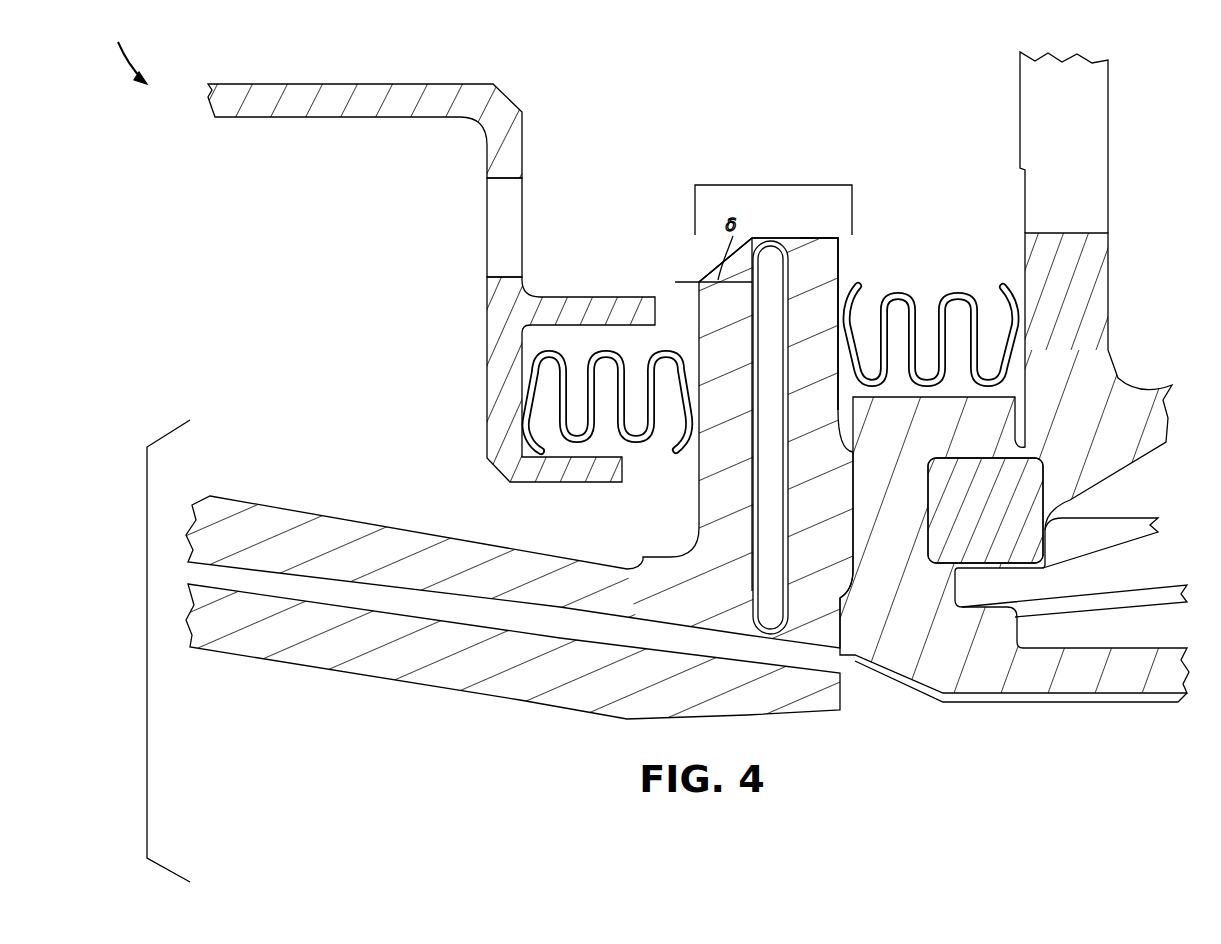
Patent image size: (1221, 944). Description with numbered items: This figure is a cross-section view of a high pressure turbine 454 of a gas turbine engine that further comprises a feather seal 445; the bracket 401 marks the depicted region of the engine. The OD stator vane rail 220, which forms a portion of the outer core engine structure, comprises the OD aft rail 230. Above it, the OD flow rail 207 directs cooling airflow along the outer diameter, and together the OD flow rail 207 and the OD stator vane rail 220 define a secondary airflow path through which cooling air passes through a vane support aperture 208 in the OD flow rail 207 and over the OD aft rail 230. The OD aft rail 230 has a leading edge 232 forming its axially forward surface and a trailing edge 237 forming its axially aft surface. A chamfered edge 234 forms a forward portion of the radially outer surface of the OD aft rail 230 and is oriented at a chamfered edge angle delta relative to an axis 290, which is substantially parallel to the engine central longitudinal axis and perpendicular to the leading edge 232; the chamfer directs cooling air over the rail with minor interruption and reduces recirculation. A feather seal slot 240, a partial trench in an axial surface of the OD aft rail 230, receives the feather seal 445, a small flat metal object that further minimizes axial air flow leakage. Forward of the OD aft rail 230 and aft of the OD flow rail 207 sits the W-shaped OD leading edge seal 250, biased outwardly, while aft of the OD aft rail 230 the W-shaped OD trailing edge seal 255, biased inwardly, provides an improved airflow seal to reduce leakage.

The high pressure turbine 454 is at (117, 51).
The engine section 401 is at (147, 660).
The OD flow rail 207 is at (493, 118).
The vane support aperture 208 is at (504, 210).
The leading edge 232 is at (700, 327).
The OD leading edge seal 250 is at (537, 360).
The OD stator vane rail 220 is at (384, 560).
The axis 290 is at (678, 282).
The chamfered edge 234 is at (716, 268).
The feather seal slot 240 is at (786, 237).
The trailing edge 237 is at (840, 252).
The feather seal 445 is at (770, 353).
The OD aft rail 230 is at (820, 184).
The OD trailing edge seal 255 is at (1010, 295).